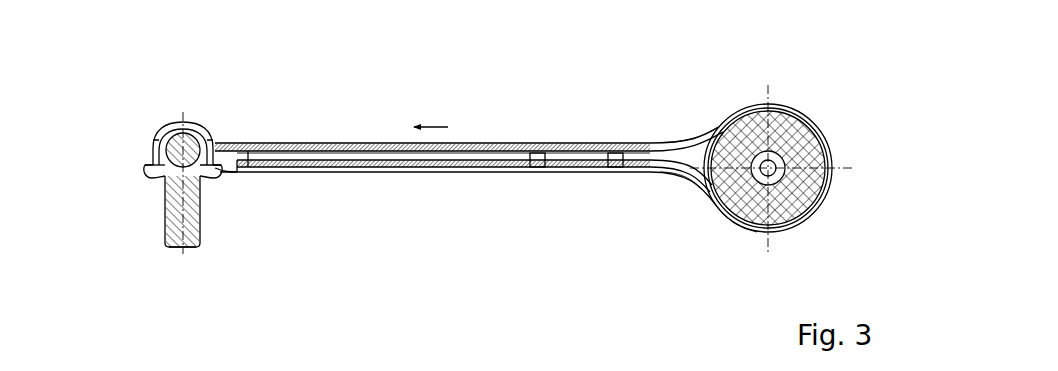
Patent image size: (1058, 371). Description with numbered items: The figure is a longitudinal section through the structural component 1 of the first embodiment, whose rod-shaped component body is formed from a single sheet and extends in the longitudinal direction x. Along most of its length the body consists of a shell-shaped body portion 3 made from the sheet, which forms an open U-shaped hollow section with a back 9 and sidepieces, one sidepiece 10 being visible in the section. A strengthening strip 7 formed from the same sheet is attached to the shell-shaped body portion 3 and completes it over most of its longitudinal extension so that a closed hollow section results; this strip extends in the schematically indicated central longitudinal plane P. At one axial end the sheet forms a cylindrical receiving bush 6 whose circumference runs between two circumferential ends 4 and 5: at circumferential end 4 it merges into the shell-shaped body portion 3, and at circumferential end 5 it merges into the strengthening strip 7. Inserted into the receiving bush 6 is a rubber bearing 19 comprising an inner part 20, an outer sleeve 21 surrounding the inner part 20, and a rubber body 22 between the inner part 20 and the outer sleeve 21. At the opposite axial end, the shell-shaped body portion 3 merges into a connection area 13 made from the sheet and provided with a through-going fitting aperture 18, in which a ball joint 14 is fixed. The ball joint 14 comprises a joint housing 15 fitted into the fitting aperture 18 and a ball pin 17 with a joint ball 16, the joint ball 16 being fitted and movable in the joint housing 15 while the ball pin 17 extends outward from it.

The structural component 1 is at (370, 110).
The shell-shaped body portion 3 is at (572, 142).
The circumferential end 4 is at (704, 130).
The circumferential end 5 is at (700, 182).
The receiving bush 6 is at (757, 233).
The strengthening strip 7 is at (482, 169).
The back 9 is at (470, 144).
The sidepiece 10 is at (388, 174).
The connection area 13 is at (147, 148).
The ball joint 14 is at (157, 204).
The joint housing 15 is at (212, 138).
The joint ball 16 is at (181, 128).
The ball pin 17 is at (200, 233).
The fitting aperture 18 is at (154, 146).
The rubber bearing 19 is at (684, 136).
The inner part 20 is at (731, 222).
The outer sleeve 21 is at (782, 106).
The rubber body 22 is at (735, 112).
The longitudinal direction x is at (435, 127).
The central longitudinal plane P is at (842, 160).